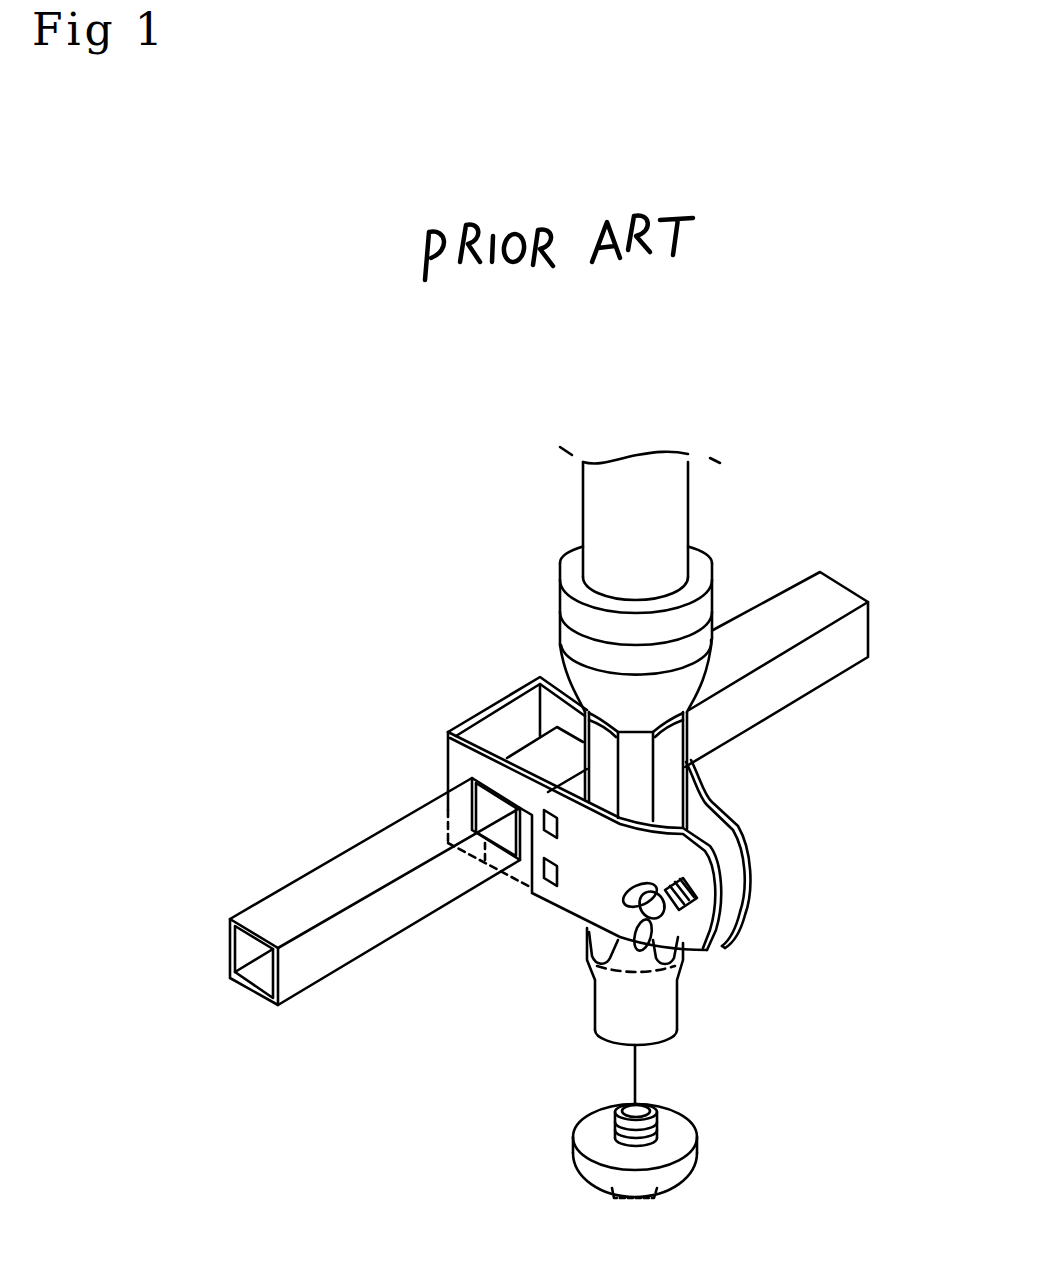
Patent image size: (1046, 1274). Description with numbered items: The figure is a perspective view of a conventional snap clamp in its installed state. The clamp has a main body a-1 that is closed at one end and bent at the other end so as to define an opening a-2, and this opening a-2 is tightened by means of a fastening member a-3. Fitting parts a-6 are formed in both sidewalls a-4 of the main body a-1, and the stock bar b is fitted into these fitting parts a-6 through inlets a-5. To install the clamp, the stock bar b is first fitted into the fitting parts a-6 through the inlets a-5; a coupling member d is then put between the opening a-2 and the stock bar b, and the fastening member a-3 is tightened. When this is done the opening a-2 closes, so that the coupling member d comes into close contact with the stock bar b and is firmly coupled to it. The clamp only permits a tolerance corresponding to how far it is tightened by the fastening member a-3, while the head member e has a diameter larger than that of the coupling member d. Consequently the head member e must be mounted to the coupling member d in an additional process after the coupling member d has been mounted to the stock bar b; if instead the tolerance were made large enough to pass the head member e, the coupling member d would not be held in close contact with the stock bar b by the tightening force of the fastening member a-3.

The main body a-1 is at (438, 724).
The opening a-2 is at (732, 878).
The fastening member a-3 is at (693, 960).
The sidewalls a-4 is at (510, 783).
The inlets a-5 is at (485, 845).
The fitting parts a-6 is at (488, 798).
The stock bar b is at (393, 917).
The coupling member d is at (670, 798).
The head member e is at (668, 1173).